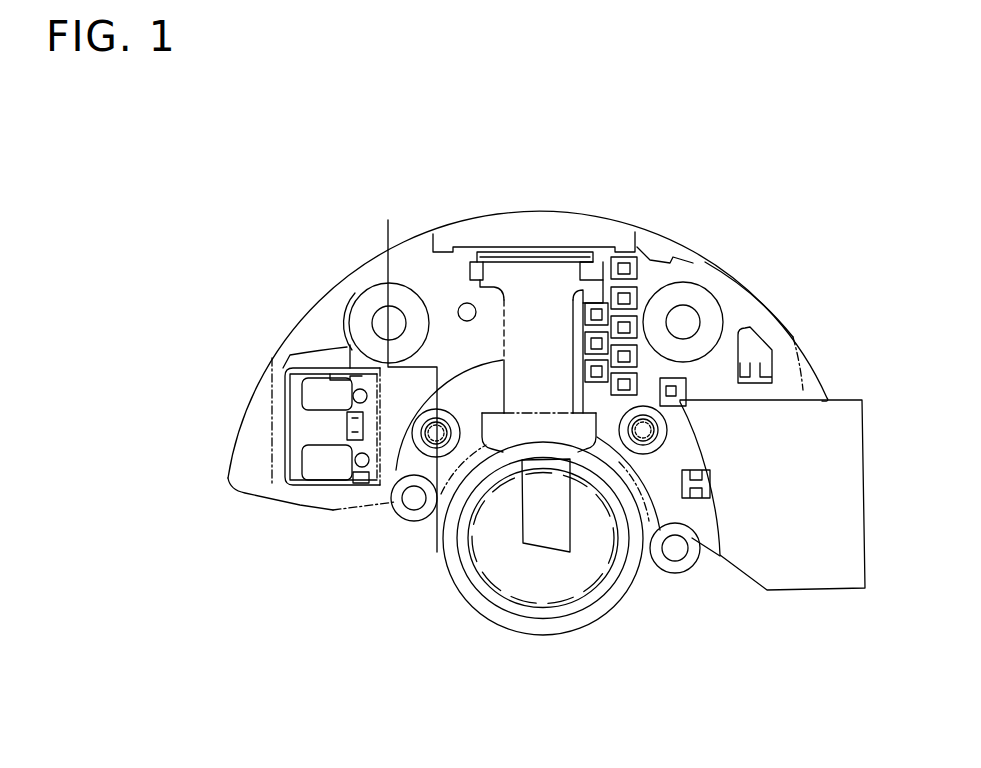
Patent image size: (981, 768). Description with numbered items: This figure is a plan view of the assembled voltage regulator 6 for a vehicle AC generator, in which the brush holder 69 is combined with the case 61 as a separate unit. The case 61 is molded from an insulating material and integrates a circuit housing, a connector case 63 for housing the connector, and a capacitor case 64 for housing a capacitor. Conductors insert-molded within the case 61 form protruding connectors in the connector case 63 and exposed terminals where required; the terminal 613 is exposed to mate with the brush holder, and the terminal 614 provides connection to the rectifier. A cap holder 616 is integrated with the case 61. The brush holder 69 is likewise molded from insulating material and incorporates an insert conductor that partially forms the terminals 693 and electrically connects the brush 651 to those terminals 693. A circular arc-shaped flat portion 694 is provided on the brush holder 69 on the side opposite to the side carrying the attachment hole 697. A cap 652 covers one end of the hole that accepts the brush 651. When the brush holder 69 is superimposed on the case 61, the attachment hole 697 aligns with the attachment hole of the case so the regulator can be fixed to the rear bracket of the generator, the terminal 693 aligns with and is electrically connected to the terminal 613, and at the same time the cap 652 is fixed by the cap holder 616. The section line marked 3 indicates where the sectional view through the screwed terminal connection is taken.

The voltage regulator 6 is at (360, 270).
The case 61 is at (667, 507).
The connector case 63 is at (843, 418).
The capacitor case 64 is at (300, 357).
The brush holder 69 is at (543, 292).
The terminal 613 is at (539, 431).
The terminal 614 is at (387, 507).
The cap holder 616 is at (520, 250).
The brush 651 is at (542, 533).
The cap 652 is at (483, 250).
The terminal 693 is at (252, 543).
The circular arc-shaped flat portion 694 is at (255, 442).
The attachment hole 697 is at (367, 306).
The section line III-III 3 is at (375, 238).